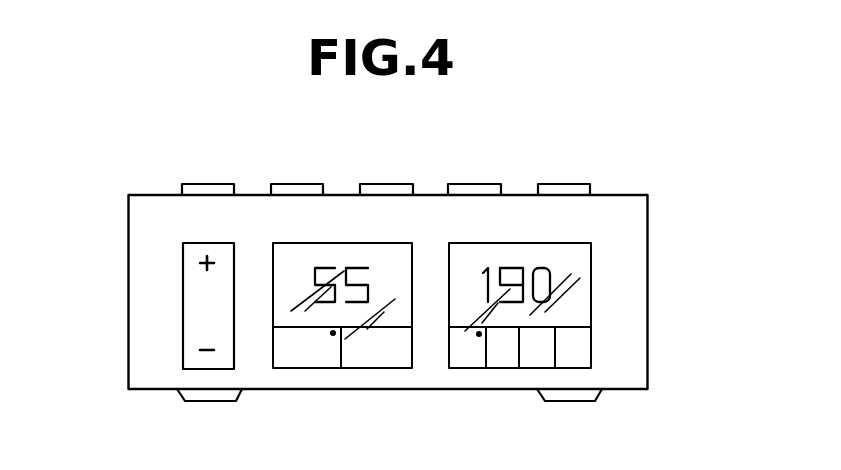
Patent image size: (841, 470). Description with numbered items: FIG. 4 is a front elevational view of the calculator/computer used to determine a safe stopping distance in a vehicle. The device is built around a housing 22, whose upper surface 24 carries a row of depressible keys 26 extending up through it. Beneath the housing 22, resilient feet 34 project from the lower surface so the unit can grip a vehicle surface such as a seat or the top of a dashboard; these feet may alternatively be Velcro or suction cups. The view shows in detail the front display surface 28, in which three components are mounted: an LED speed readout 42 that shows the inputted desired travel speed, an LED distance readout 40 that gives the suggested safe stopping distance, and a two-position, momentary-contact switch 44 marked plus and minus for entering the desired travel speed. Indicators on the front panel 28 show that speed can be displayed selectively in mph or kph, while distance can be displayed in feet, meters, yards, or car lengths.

The housing 22 is at (156, 239).
The upper surface 24 is at (628, 193).
The depressible keys 26 is at (565, 188).
The front display surface 28 is at (632, 347).
The resilient feet 34 is at (573, 397).
The LED distance readout 40 is at (578, 307).
The LED speed readout 42 is at (293, 259).
The two-position, momentary-contact switch 44 is at (203, 304).